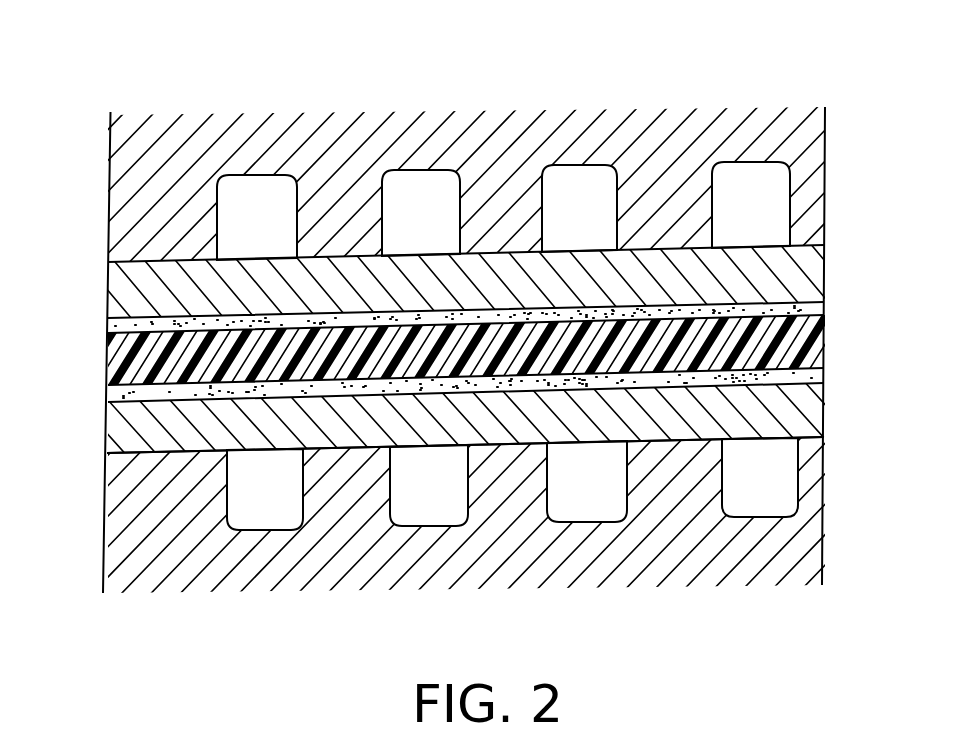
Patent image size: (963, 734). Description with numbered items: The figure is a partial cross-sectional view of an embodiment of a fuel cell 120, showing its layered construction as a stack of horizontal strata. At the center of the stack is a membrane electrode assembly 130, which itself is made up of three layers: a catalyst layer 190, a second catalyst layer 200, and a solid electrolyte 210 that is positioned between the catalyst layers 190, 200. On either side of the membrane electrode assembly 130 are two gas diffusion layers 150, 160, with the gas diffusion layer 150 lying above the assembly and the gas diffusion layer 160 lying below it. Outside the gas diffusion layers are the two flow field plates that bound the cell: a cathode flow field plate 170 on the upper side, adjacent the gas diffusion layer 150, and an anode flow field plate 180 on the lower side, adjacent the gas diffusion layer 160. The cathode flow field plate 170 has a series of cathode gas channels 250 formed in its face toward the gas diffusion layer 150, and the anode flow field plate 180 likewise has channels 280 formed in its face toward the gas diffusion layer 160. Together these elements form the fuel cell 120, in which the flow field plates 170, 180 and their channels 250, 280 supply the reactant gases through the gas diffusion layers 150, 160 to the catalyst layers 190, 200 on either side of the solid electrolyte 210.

The fuel cell 120 is at (596, 85).
The membrane electrode assembly 130 is at (474, 336).
The gas diffusion layer 150 is at (822, 268).
The gas diffusion layer 160 is at (816, 415).
The cathode flow field plate 170 is at (417, 132).
The anode flow field plate 180 is at (307, 568).
The catalyst layer 190 is at (826, 301).
The catalyst layer 200 is at (824, 378).
The solid electrolyte 210 is at (826, 340).
The cathode gas channels 250 is at (257, 208).
The channels 280 is at (263, 480).